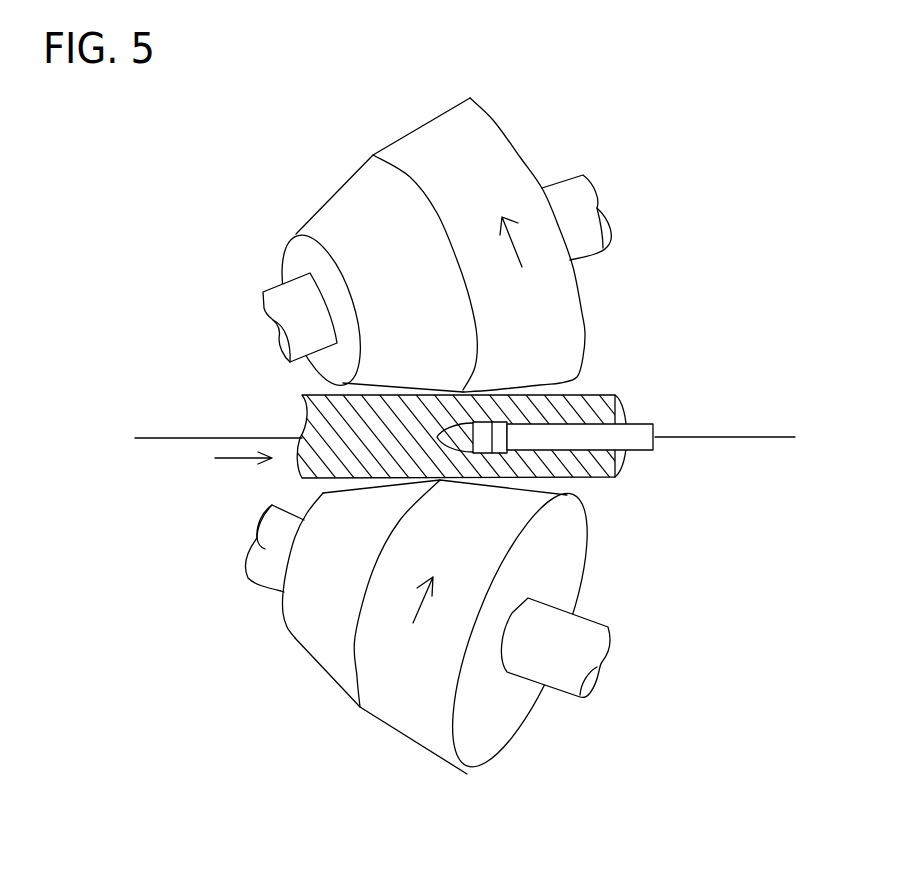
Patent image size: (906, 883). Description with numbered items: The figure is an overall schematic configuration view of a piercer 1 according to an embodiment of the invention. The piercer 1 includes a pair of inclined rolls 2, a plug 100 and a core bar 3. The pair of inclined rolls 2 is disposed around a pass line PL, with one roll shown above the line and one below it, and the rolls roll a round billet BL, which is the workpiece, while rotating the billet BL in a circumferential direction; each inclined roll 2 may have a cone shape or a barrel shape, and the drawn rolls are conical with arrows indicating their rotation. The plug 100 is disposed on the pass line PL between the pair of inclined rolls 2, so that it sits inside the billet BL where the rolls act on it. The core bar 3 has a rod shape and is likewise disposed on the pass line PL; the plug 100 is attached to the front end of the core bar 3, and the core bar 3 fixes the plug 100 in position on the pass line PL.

The piercer 1 is at (255, 231).
The inclined rolls 2 is at (493, 133).
The core bar 3 is at (583, 440).
The plug 100 is at (499, 416).
The pass line PL is at (175, 437).
The round billet BL is at (304, 424).